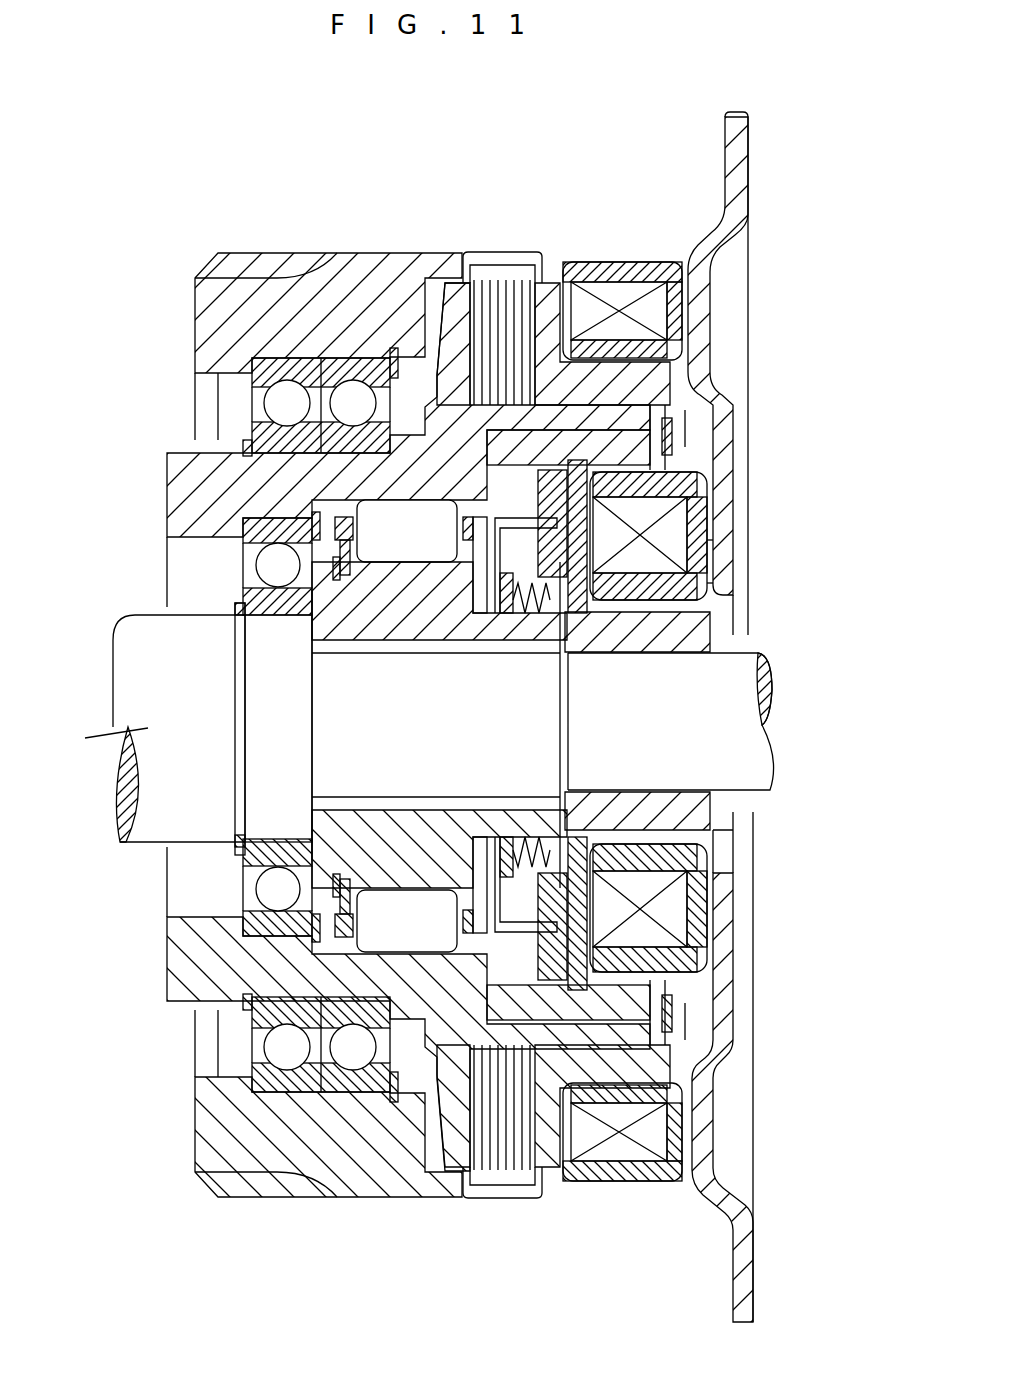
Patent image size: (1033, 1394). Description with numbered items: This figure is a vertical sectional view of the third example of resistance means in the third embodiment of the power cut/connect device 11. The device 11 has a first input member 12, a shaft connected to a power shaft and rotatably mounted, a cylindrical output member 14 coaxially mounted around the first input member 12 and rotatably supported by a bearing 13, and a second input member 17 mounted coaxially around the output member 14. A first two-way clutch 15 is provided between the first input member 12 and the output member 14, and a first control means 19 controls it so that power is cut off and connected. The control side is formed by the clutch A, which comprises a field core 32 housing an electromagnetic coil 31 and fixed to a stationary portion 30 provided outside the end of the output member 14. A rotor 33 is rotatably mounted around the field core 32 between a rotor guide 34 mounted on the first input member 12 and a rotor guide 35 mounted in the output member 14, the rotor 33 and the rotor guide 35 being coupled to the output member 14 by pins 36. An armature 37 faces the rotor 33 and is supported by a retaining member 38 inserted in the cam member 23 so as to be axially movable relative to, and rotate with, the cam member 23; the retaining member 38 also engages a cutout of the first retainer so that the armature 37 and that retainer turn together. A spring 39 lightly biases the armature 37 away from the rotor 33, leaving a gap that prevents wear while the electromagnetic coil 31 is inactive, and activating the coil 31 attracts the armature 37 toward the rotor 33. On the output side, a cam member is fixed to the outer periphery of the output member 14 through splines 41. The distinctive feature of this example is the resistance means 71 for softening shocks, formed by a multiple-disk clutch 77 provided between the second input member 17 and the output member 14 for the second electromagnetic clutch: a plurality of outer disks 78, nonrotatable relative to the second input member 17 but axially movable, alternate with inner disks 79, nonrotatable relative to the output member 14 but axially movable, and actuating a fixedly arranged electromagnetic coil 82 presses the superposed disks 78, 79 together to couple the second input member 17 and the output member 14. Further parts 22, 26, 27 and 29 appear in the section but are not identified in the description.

The rotation cut/connect device 11 is at (228, 253).
The first input member 12 is at (409, 728).
The bearing 13 is at (268, 572).
The output member 14 is at (180, 495).
The first two-way clutch 15 is at (347, 945).
The second input member 17 is at (215, 322).
The first control means 19 is at (711, 543).
The hub 22 is at (333, 803).
The cam member 23 is at (385, 840).
The bearing 26 is at (363, 590).
The roller 27 is at (458, 882).
The roller 29 is at (462, 582).
The stationary portion 30 is at (740, 197).
The electromagnetic coil 31 is at (672, 527).
The field core 32 is at (673, 473).
The rotor 33 is at (725, 832).
The rotor guide 34 is at (690, 812).
The rotor guide 35 is at (688, 1040).
The pins 36 is at (660, 978).
The armature 37 is at (575, 395).
The retaining member 38 is at (600, 897).
The spring 39 is at (522, 618).
The splines 41 is at (277, 1057).
The resistance means 71 is at (503, 258).
The multiple-disk clutch 77 is at (546, 264).
The outer disks 78 is at (480, 263).
The inner disks 79 is at (450, 333).
The electromagnetic coil 82 is at (657, 311).
The clutch A is at (712, 583).